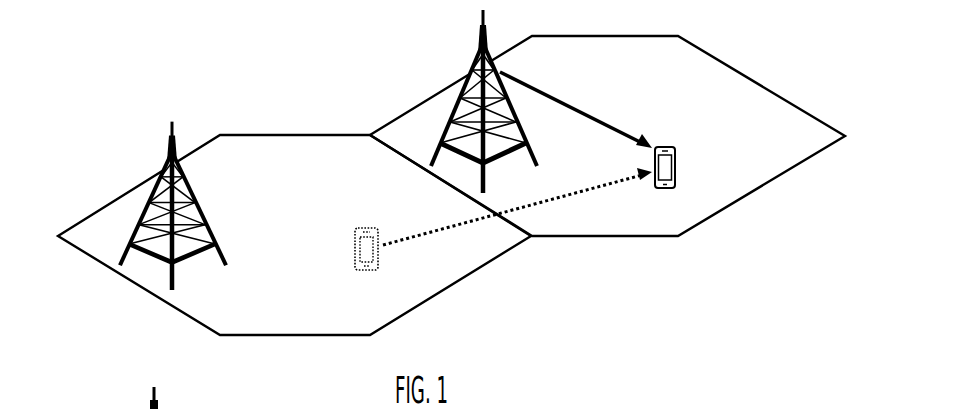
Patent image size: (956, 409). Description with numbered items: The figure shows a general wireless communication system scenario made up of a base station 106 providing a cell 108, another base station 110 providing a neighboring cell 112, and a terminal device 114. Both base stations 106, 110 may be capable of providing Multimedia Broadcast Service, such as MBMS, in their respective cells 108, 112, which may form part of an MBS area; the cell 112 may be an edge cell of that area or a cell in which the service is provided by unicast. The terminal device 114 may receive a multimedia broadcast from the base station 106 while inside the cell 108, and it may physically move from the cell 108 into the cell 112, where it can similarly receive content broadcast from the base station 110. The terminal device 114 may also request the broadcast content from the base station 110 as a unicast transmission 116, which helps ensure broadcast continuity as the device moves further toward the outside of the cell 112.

The base station 106 is at (198, 205).
The cell 108 is at (58, 236).
The base station 110 is at (522, 133).
The cell 112 is at (678, 36).
The terminal device 114 is at (663, 147).
The unicast transmission 116 is at (590, 116).